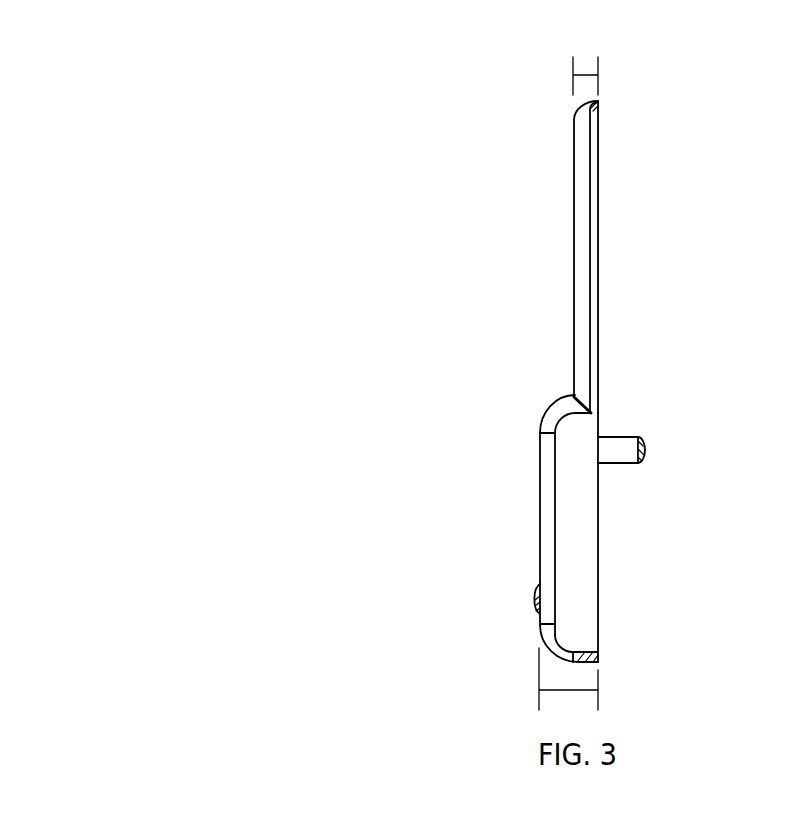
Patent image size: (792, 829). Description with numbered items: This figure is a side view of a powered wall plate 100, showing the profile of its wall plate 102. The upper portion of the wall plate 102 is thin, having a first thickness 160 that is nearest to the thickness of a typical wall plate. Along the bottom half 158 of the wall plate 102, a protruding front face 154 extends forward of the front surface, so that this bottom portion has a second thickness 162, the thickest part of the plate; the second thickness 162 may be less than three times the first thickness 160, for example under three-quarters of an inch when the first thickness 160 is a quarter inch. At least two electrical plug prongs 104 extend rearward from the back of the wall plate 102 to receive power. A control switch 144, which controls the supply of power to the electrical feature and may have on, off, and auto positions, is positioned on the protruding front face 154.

The powered wall plate 100 is at (300, 261).
The wall plate 102 is at (580, 186).
The electrical plug prongs 104 is at (612, 448).
The control switch 144 is at (533, 603).
The protruding front face 154 is at (547, 448).
The bottom half 158 is at (578, 523).
The first thickness 160 is at (592, 77).
The second thickness 162 is at (573, 689).